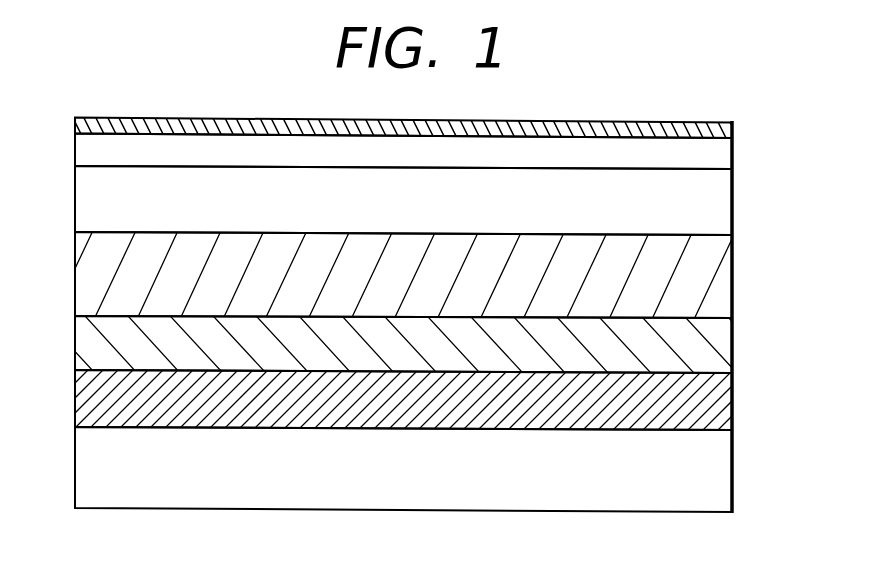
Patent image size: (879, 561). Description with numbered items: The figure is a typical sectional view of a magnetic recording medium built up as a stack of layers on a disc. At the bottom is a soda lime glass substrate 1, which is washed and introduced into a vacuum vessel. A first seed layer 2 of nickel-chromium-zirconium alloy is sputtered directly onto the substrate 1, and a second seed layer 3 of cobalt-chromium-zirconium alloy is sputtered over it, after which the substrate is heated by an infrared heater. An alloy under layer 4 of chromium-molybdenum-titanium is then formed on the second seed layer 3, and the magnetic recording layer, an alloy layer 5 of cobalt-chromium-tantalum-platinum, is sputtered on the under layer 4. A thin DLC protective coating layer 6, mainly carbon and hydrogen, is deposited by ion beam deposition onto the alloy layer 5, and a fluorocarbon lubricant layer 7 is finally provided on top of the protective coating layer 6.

The soda lime glass substrate 1 is at (713, 472).
The first seed layer 2 is at (715, 403).
The second seed layer 3 is at (717, 347).
The alloy under layer 4 is at (717, 284).
The alloy layer 5 is at (722, 207).
The DLC protective coating layer 6 is at (717, 157).
The lubricant layer 7 is at (734, 128).